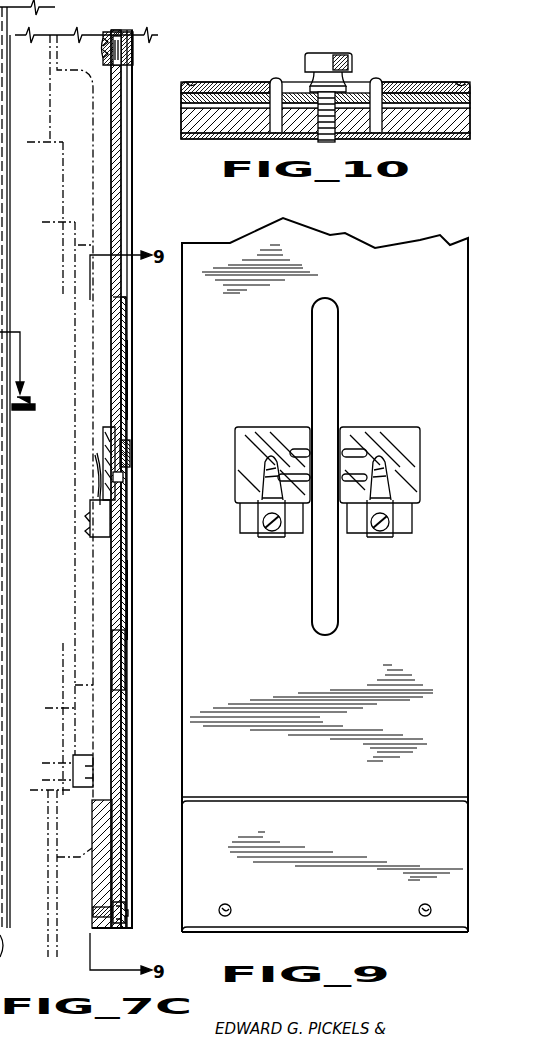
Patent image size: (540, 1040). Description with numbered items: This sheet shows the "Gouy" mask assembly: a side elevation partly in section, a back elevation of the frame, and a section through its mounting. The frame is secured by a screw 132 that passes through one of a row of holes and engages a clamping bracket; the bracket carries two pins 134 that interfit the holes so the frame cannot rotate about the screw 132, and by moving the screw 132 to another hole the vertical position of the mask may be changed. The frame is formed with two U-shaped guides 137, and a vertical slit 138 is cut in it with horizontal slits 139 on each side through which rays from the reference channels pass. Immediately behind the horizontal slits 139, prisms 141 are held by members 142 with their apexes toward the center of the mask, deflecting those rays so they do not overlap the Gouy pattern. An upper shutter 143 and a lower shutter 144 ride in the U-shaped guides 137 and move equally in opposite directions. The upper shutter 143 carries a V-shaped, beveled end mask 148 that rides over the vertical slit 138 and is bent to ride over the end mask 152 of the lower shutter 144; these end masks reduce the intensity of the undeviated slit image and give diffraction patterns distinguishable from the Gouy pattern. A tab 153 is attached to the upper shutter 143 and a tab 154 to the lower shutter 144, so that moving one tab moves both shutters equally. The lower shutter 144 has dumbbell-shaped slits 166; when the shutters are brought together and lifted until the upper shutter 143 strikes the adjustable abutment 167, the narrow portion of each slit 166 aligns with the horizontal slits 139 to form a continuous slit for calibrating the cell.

In FIG. 10, the screw 132 is at (325, 68).
In FIG. 10, the pins 134 is at (276, 80).
In FIG. 7C, the U-shaped guides 137 is at (128, 382).
In FIG. 10, the U-shaped guides 137 is at (190, 85).
In FIG. 9, the vertical slit 138 is at (334, 322).
In FIG. 9, the horizontal slits 139 is at (293, 450).
In FIG. 7C, the prisms 141 is at (106, 432).
In FIG. 9, the prisms 141 is at (241, 428).
In FIG. 7C, the members 142 is at (100, 492).
In FIG. 9, the members 142 is at (268, 482).
In FIG. 7C, the upper shutter 143 is at (122, 338).
In FIG. 7C, the lower shutter 144 is at (128, 600).
In FIG. 7C, the end mask 148 is at (128, 463).
In FIG. 7C, the end mask 152 is at (121, 478).
In FIG. 10, the tab 153 is at (222, 86).
In FIG. 7C, the tab 154 is at (128, 202).
In FIG. 10, the tab 154 is at (420, 88).
In FIG. 7C, the dumbbell-shaped slits 166 is at (122, 670).
In FIG. 7C, the abutment 167 is at (133, 52).